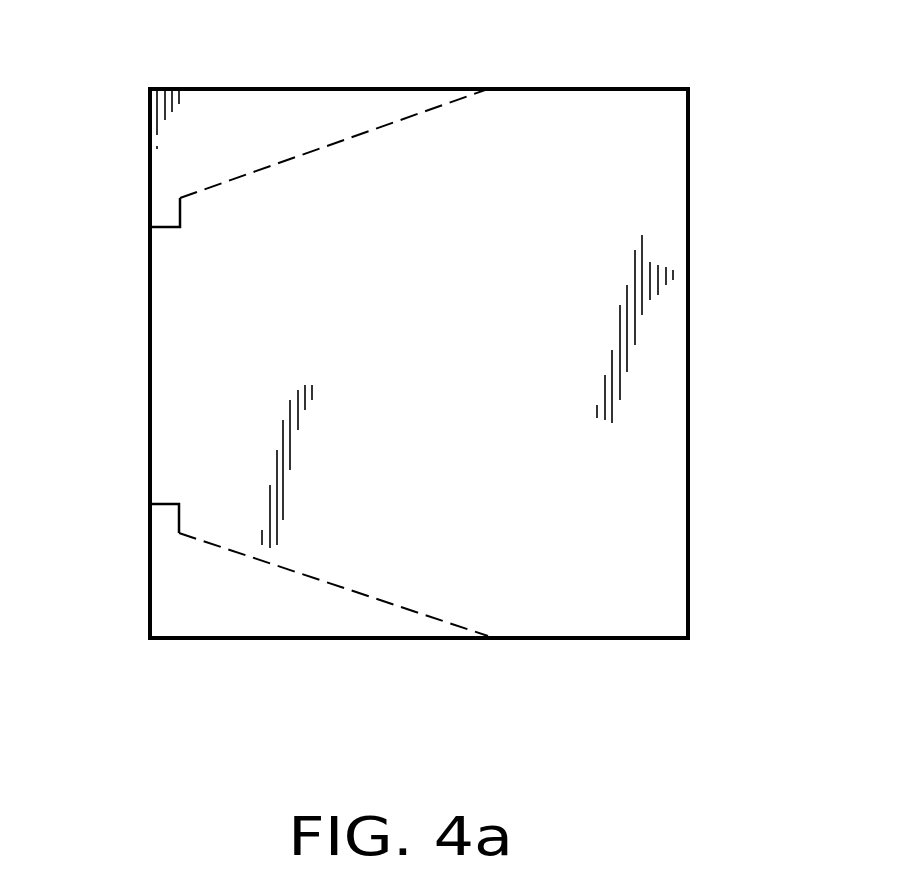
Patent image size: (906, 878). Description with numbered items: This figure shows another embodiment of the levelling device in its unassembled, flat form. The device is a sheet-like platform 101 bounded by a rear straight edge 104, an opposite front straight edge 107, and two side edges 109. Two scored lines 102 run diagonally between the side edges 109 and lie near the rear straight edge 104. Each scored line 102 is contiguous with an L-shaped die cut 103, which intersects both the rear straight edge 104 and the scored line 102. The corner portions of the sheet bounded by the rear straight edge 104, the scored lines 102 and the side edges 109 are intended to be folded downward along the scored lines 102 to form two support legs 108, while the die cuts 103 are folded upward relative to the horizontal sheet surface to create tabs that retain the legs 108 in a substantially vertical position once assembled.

The platform 101 is at (655, 137).
The scored lines 102 is at (303, 155).
The die cuts 103 is at (177, 519).
The rear straight edge 104 is at (151, 413).
The front straight edge 107 is at (692, 307).
The support legs 108 is at (212, 613).
The side edges 109 is at (540, 88).